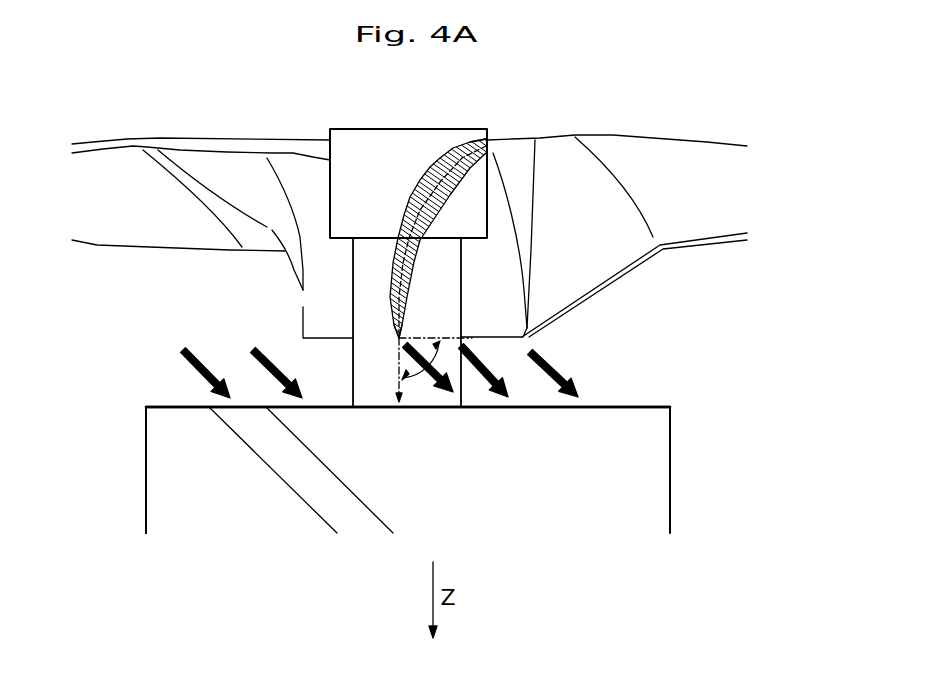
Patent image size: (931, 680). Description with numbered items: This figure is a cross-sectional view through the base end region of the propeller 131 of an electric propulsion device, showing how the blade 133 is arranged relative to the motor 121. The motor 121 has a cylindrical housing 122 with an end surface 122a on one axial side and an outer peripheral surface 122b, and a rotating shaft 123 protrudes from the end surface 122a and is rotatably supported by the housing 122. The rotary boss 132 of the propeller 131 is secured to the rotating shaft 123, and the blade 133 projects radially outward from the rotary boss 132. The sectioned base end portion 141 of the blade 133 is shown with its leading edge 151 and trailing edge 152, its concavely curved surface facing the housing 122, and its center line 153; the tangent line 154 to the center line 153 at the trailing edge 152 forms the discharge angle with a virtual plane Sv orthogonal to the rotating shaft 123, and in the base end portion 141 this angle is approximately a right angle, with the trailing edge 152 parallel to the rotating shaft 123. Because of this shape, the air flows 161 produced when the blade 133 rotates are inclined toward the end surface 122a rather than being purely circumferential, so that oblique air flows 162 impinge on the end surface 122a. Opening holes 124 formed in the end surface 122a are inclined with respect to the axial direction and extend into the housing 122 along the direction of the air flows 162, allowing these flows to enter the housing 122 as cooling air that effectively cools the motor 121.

The motor 121 is at (671, 408).
The housing 122 is at (653, 442).
The end surface 122a is at (167, 407).
The outer peripheral surface 122b is at (145, 430).
The rotating shaft 123 is at (442, 268).
The opening holes 124 is at (283, 478).
The propeller 131 is at (705, 140).
The rotary boss 132 is at (361, 138).
The blade 133 is at (652, 160).
The base end portion 141 is at (403, 216).
The leading edge 151 is at (493, 140).
The trailing edge 152 is at (398, 341).
The center line 153 is at (443, 163).
The tangent line 154 is at (399, 386).
The air flows 161 is at (456, 381).
The air flows 162 is at (203, 362).
The virtual plane Sv is at (447, 338).